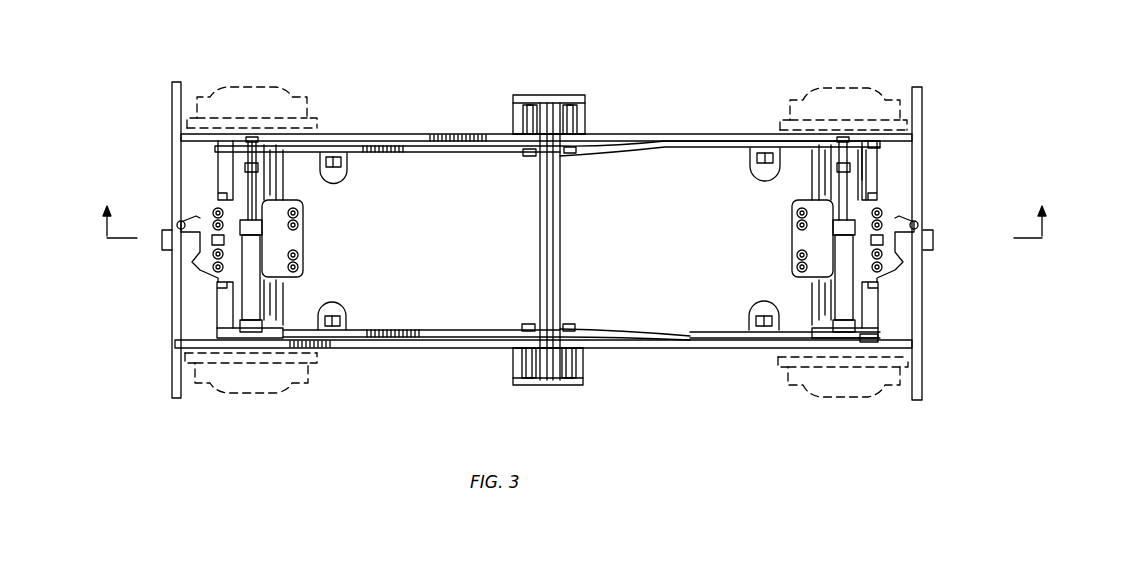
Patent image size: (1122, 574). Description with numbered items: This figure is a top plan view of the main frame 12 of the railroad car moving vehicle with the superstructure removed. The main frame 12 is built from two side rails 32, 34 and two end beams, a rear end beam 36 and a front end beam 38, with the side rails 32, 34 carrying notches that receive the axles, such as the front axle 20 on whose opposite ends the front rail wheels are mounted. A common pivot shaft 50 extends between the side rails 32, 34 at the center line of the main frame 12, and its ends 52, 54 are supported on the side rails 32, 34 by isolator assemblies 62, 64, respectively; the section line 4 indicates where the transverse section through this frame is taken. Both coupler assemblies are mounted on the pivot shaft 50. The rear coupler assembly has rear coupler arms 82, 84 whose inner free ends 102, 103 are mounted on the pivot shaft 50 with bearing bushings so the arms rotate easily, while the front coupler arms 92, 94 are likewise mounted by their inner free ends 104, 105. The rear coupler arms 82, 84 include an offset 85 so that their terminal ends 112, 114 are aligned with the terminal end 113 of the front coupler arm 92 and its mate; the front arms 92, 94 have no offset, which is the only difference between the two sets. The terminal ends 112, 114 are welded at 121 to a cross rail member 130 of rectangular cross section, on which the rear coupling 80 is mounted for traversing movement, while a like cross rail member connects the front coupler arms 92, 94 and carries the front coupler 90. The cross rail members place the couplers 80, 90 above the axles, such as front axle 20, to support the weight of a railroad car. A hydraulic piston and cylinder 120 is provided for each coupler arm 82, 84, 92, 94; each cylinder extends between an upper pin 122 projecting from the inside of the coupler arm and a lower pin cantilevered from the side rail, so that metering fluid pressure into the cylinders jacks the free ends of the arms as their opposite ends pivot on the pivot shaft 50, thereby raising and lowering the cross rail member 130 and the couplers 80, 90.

The section line 4- 4 is at (573, 211).
The main frame 12 is at (653, 354).
The front axle 20 is at (835, 107).
The side rail 32 is at (356, 134).
The side rail 34 is at (352, 346).
The rear end beam 36 is at (173, 322).
The front end beam 38 is at (923, 312).
The pivot shaft 50 is at (560, 236).
The end of pivot shaft 52 is at (548, 100).
The end of pivot shaft 54 is at (548, 385).
The isolator assembly 62 is at (600, 100).
The isolator assembly 64 is at (513, 360).
The rear coupling 80 is at (862, 267).
The rear coupler arm 82 is at (580, 157).
The rear coupler arm 84 is at (624, 331).
The offset 85 is at (703, 332).
The front coupler 90 is at (200, 218).
The front coupler arm 92 is at (430, 147).
The front coupler arm 94 is at (437, 338).
The inner free end 102 is at (528, 153).
The inner free end 103 is at (527, 328).
The inner free end 104 is at (576, 148).
The inner free end 105 is at (565, 326).
The terminal end 112 is at (880, 145).
The terminal end 113 is at (240, 147).
The terminal end 114 is at (872, 338).
The hydraulic piston and cylinder 120 is at (768, 182).
The weld 121 is at (870, 156).
The upper pin 122 is at (757, 162).
The cross rail member 130 is at (860, 170).